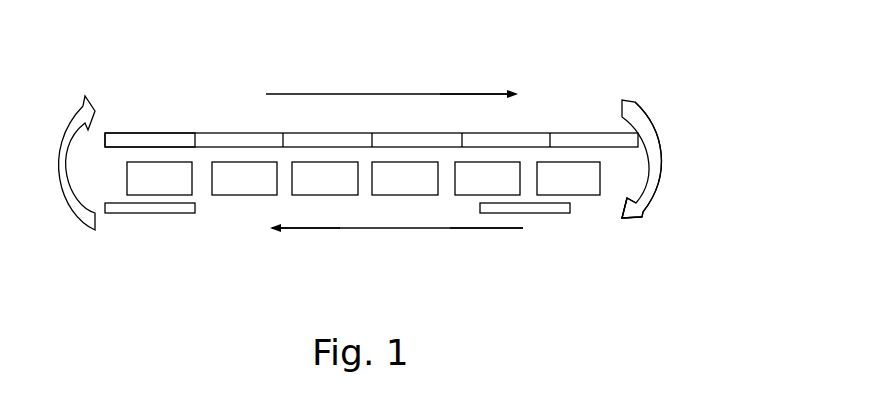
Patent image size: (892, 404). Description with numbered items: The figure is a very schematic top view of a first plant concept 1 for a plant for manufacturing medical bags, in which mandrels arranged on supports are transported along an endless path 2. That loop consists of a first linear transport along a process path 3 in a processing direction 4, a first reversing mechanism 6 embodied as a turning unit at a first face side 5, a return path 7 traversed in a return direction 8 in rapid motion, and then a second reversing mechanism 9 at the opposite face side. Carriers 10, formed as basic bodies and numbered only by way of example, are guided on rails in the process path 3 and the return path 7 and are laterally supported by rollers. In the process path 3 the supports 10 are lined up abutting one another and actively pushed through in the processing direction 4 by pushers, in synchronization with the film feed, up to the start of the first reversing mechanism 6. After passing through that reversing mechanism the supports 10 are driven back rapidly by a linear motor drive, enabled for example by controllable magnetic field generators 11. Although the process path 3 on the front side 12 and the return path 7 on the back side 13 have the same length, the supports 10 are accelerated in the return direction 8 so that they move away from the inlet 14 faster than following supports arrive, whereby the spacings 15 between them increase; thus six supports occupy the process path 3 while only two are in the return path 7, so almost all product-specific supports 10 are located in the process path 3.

The first plant concept 1 is at (642, 84).
The endless path 2 is at (655, 110).
The process path 3 is at (239, 121).
The processing direction 4 is at (378, 94).
The first face side 5 is at (665, 175).
The first reversing mechanism 6 is at (647, 207).
The return path 7 is at (290, 229).
The return direction 8 is at (375, 228).
The second reversing mechanism 9 is at (34, 178).
The carriers 10 is at (155, 142).
The controllable magnetic field generators 11 is at (585, 182).
The front side 12 is at (552, 107).
The back side 13 is at (549, 253).
The inlet 14 is at (622, 225).
The spacings 15 is at (312, 222).